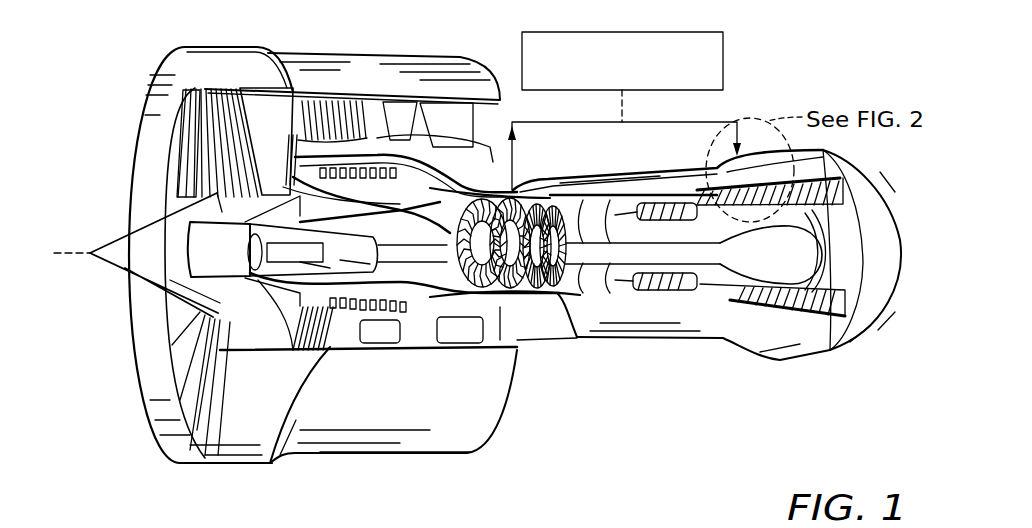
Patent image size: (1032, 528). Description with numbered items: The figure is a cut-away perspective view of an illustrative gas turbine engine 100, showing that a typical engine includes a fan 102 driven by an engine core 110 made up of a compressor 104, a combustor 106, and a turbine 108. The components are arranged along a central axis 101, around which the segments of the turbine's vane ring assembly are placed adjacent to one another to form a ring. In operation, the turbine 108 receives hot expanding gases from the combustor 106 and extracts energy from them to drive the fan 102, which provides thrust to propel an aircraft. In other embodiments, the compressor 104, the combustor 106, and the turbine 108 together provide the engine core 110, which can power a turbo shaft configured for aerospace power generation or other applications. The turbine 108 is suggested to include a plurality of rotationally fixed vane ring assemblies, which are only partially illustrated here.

The gas turbine engine 100 is at (118, 75).
The central axis 101 is at (54, 253).
The fan 102 is at (175, 98).
The compressor 104 is at (507, 308).
The combustor 106 is at (650, 313).
The turbine 108 is at (750, 318).
The engine core 110 is at (723, 134).